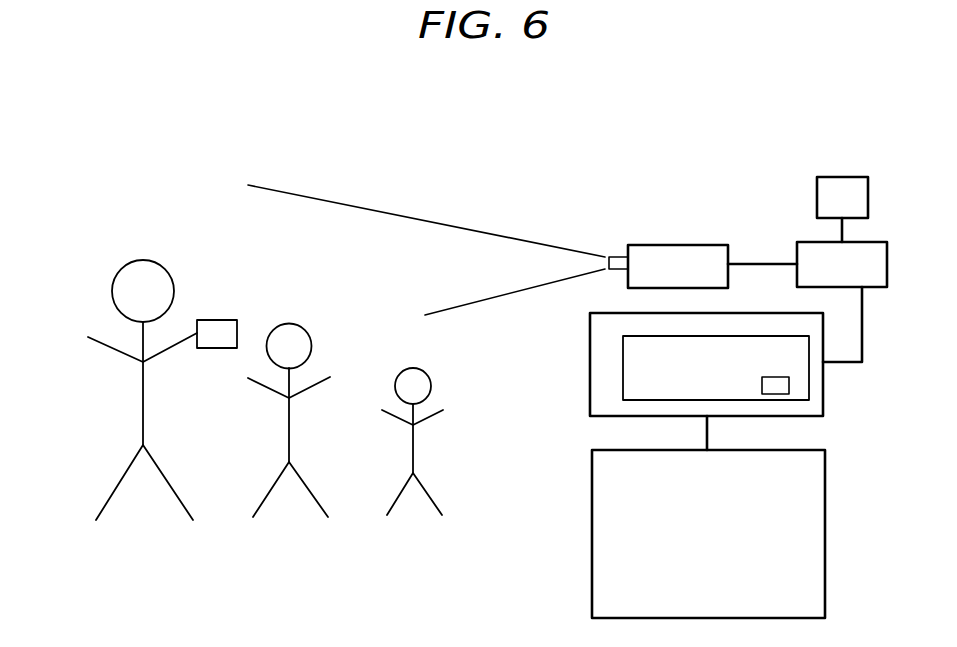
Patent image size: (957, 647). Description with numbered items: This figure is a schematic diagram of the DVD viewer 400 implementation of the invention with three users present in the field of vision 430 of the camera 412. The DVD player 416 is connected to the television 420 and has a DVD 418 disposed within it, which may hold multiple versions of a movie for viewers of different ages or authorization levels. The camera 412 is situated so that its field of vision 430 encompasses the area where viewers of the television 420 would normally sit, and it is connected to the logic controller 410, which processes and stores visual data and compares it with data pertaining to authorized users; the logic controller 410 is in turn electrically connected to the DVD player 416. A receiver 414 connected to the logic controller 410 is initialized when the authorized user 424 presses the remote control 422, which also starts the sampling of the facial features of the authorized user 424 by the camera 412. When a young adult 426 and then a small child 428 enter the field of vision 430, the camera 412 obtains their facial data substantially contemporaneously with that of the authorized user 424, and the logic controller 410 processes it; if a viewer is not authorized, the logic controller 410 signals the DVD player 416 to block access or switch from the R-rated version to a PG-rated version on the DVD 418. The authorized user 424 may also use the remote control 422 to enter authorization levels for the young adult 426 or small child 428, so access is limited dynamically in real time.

The DVD viewer 400 is at (742, 107).
The logic controller 410 is at (802, 242).
The camera 412 is at (674, 243).
The receiver 414 is at (842, 177).
The DVD player 416 is at (589, 370).
The DVD 418 is at (790, 380).
The television 420 is at (825, 503).
The remote control 422 is at (215, 318).
The authorized user 424 is at (120, 268).
The young adult 426 is at (308, 332).
The small child 428 is at (425, 375).
The field of vision 430 is at (398, 213).